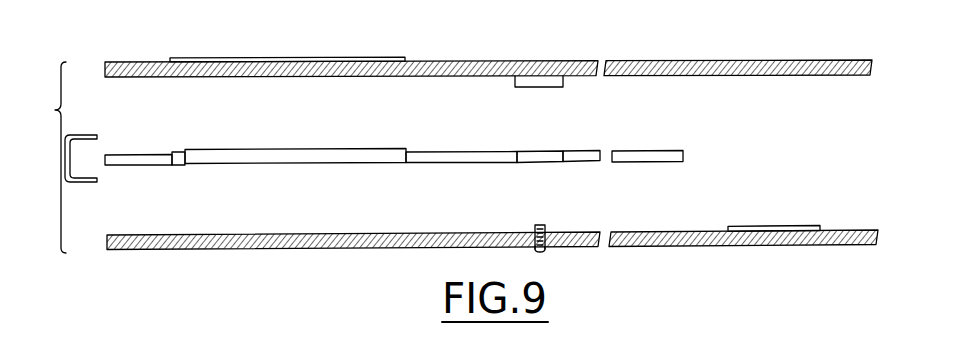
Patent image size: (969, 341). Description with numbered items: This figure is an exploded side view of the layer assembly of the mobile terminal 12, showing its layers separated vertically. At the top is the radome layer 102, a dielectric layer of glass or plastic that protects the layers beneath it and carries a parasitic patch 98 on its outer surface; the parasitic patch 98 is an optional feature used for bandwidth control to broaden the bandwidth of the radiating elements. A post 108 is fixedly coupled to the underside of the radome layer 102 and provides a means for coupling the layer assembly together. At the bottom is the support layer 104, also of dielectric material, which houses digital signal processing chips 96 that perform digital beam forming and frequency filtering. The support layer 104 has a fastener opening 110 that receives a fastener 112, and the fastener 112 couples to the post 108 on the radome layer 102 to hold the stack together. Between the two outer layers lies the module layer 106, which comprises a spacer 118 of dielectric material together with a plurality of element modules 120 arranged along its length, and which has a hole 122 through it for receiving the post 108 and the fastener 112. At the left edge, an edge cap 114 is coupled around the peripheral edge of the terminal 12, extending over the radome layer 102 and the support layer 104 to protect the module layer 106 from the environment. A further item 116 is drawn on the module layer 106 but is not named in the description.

The mobile terminal 12 is at (46, 157).
The digital signal processing chips 96 is at (752, 226).
The parasitic patch 98 is at (355, 58).
The radome layer 102 is at (788, 60).
The support layer 104 is at (847, 230).
The module layer 106 is at (683, 156).
The post 108 is at (515, 82).
The fastener opening 110 is at (535, 228).
The fastener 112 is at (540, 251).
The edge cap 114 is at (85, 135).
The tab 116 is at (127, 155).
The spacer 118 is at (160, 165).
The element modules 120 is at (313, 163).
The hole 122 is at (561, 152).